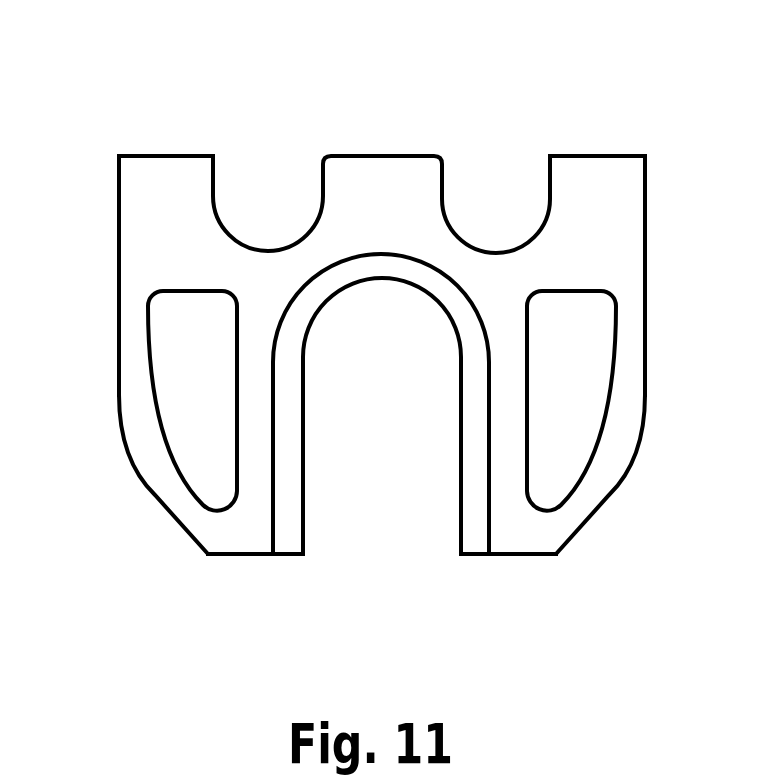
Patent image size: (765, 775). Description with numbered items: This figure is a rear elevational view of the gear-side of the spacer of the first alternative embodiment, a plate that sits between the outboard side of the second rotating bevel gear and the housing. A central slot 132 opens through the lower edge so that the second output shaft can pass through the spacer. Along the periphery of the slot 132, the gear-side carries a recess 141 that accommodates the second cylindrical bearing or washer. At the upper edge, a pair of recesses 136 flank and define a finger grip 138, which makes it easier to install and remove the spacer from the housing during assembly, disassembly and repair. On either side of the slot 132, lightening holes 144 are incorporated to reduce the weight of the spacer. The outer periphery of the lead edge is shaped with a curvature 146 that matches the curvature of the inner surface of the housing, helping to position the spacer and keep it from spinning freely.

The slot 132 is at (421, 369).
The recesses 136 is at (267, 248).
The finger grip 138 is at (387, 157).
The recess 141 is at (474, 414).
The lightening holes 144 is at (228, 372).
The curvature 146 is at (153, 497).